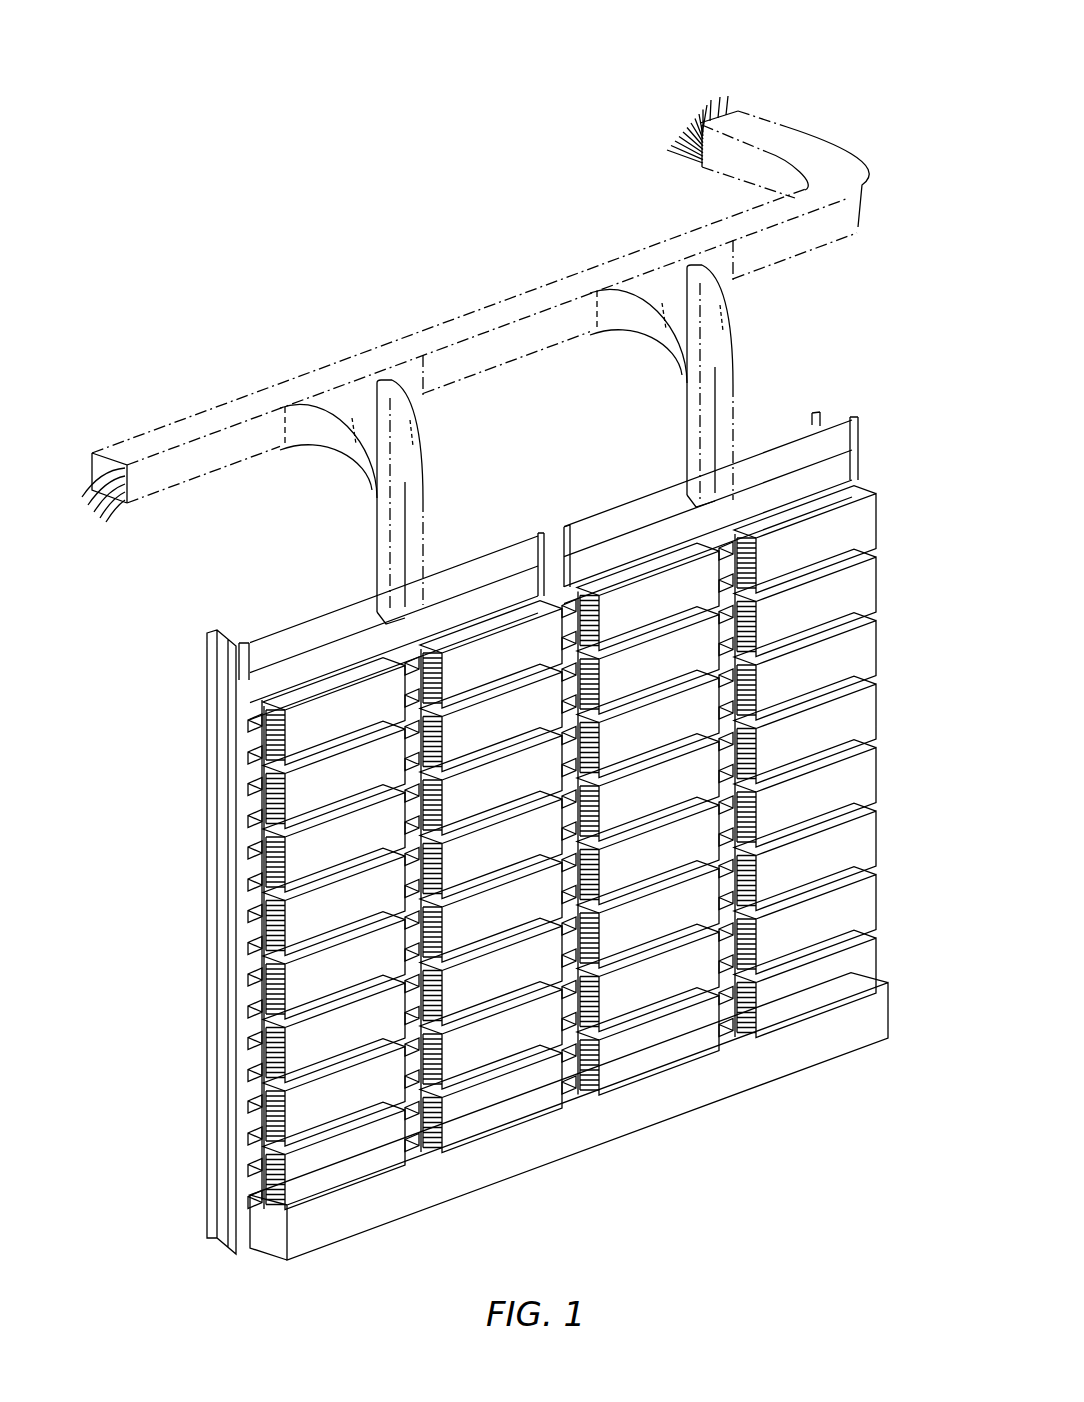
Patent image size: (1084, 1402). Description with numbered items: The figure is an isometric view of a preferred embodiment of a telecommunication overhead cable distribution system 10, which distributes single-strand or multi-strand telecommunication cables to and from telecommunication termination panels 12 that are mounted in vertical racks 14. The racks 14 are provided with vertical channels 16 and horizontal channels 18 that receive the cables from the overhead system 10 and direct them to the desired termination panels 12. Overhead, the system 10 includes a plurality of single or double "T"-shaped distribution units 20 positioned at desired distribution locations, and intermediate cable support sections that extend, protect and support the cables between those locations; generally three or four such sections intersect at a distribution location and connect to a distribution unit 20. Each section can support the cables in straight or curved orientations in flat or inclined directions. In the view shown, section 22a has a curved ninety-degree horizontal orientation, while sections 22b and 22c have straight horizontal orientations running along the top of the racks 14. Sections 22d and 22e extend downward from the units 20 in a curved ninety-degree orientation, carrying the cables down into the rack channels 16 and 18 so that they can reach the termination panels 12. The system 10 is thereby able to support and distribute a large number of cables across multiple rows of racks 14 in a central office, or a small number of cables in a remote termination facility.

The telecommunication overhead cable distribution system 10 is at (810, 94).
The telecommunication termination panel 12 is at (862, 590).
The vertical rack 14 is at (213, 922).
The vertical channel 16 is at (443, 810).
The horizontal channel 18 is at (637, 537).
The "T"-shaped distribution unit 20 is at (626, 252).
The cable support section 22a is at (850, 221).
The cable support section 22b is at (480, 363).
The cable support section 22c is at (207, 470).
The cable support section 22d is at (807, 395).
The cable support section 22e is at (485, 502).